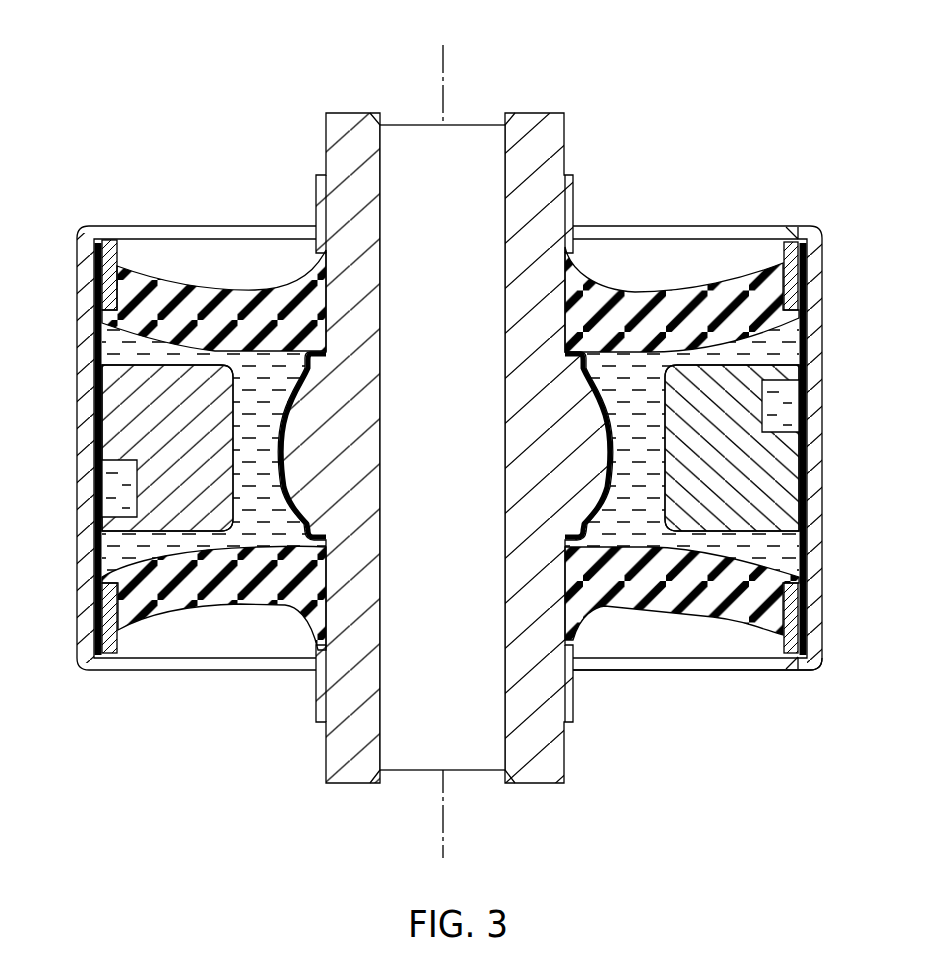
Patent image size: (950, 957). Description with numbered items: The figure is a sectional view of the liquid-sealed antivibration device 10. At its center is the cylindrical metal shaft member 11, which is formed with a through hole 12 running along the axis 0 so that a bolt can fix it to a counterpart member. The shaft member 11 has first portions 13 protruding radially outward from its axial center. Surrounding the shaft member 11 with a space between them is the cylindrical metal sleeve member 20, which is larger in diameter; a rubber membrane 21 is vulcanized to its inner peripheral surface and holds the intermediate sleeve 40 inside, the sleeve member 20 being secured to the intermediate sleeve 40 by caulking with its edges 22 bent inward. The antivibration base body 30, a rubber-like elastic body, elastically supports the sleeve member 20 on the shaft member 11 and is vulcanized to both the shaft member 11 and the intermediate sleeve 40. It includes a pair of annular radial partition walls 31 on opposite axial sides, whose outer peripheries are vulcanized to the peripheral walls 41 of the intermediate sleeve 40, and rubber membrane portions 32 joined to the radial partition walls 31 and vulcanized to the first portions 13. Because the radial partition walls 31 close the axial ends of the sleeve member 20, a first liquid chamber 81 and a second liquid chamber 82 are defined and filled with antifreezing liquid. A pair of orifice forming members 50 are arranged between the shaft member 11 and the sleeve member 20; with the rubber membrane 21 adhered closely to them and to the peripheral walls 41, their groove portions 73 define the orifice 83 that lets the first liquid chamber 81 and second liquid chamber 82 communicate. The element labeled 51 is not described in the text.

The axis 0 is at (446, 87).
The liquid-sealed antivibration device 10 is at (763, 110).
The shaft member 11 is at (550, 138).
The through hole 12 is at (378, 175).
The first portions 13 is at (594, 396).
The sleeve member 20 is at (817, 263).
The rubber membrane 21 is at (823, 480).
The edges 22 is at (797, 233).
The antivibration base body 30 is at (665, 281).
The radial partition walls 31 is at (622, 298).
The rubber membrane portions 32 is at (606, 487).
The intermediate sleeve 40 is at (773, 672).
The peripheral walls 41 is at (795, 277).
The orifice forming members 50 is at (213, 358).
The rubber layer 51 is at (110, 412).
The groove portions 73 is at (113, 512).
The first liquid chamber 81 is at (262, 455).
The second liquid chamber 82 is at (632, 441).
The orifice 83 is at (118, 487).